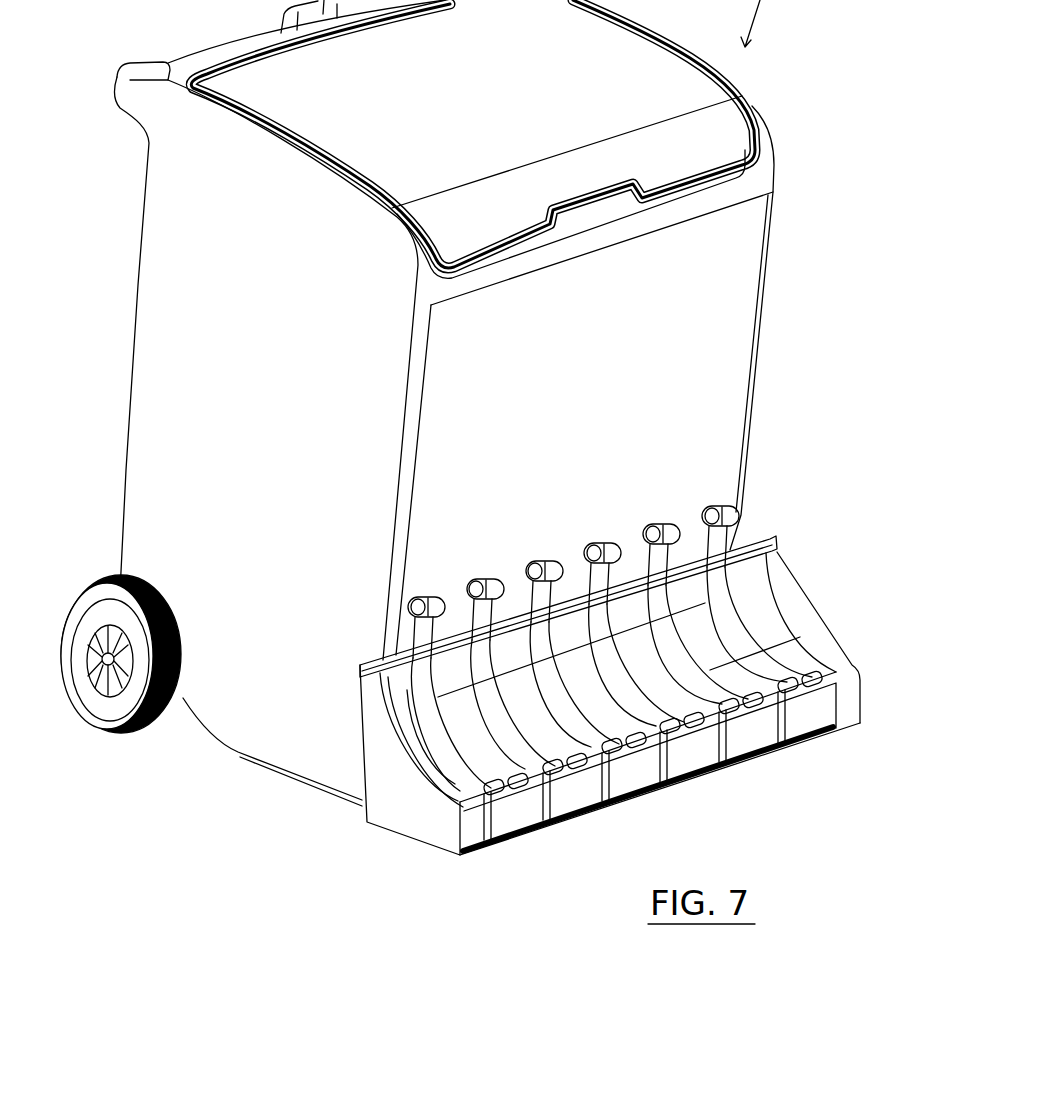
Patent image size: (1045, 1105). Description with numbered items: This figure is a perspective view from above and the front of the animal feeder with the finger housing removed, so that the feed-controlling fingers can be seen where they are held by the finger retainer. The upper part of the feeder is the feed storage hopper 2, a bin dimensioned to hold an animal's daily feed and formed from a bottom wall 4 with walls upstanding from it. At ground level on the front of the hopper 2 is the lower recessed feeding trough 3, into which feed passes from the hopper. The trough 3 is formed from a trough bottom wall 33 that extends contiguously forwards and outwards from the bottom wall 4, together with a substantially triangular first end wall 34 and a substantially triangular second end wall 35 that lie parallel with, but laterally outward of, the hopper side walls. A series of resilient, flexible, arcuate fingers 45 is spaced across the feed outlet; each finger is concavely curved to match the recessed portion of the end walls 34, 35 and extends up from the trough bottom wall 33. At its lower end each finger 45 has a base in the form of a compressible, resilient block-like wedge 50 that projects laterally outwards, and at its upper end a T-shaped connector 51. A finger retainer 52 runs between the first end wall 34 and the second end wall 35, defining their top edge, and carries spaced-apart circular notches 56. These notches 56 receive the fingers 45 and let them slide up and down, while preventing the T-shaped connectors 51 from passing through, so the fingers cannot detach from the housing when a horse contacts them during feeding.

The hopper 2 is at (762, 247).
The feeding trough 3 is at (591, 686).
The bottom wall 4 is at (288, 773).
The trough bottom wall 33 is at (640, 795).
The first end wall 34 is at (387, 813).
The second end wall 35 is at (777, 580).
The fingers 45 is at (750, 643).
The block-like wedge 50 is at (772, 738).
The T-shaped connector 51 is at (735, 490).
The finger retainer 52 is at (753, 540).
The circular notches 56 is at (413, 727).